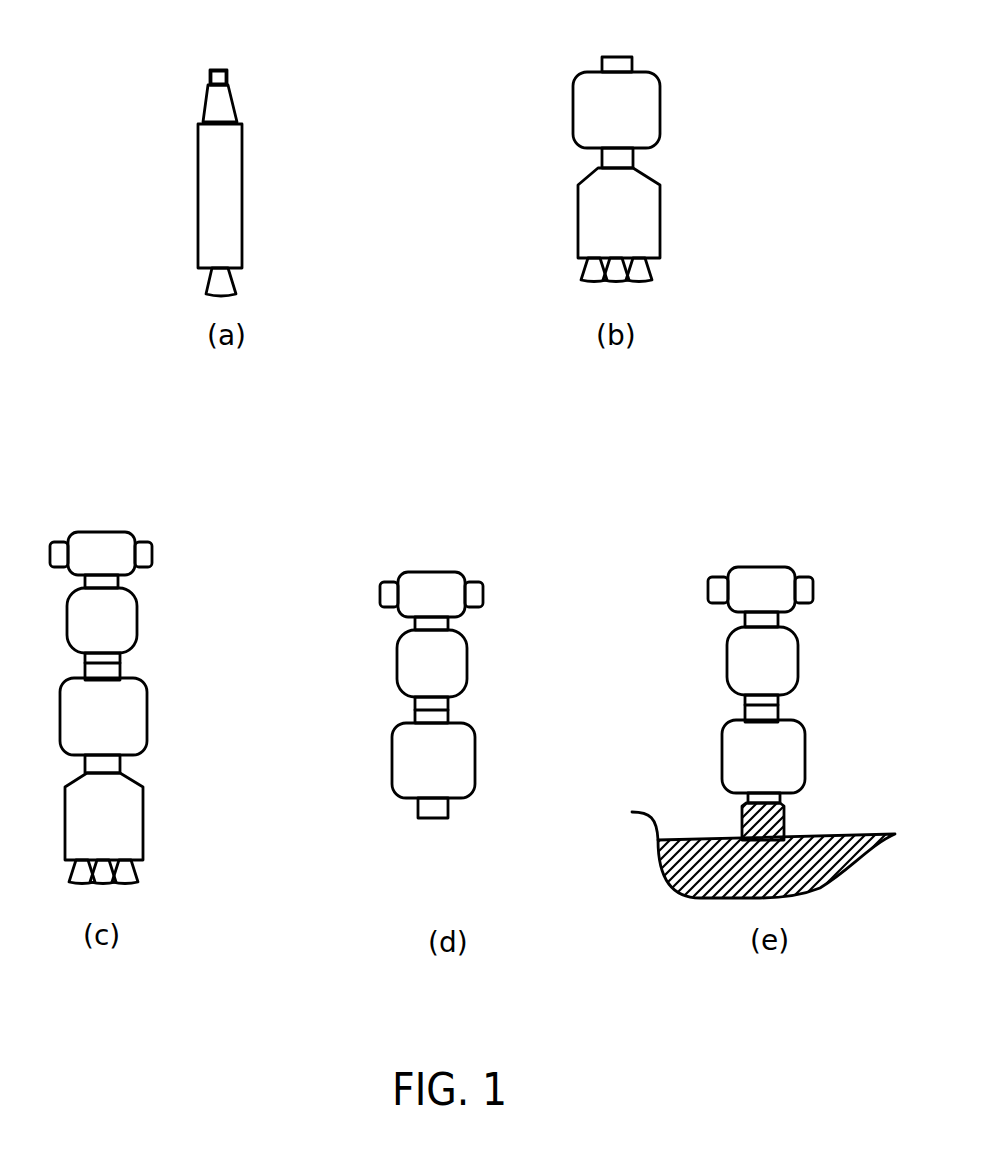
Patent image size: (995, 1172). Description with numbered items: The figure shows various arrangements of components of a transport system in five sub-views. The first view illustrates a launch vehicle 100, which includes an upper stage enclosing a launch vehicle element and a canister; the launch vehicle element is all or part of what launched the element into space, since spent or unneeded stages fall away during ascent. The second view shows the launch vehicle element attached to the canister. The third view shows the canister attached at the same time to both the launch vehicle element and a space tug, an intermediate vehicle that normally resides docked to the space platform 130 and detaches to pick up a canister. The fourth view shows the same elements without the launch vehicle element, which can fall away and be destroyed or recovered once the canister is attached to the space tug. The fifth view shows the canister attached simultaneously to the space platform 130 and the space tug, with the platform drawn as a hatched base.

The launch vehicle 100 is at (290, 65).
The space platform 130 is at (807, 840).